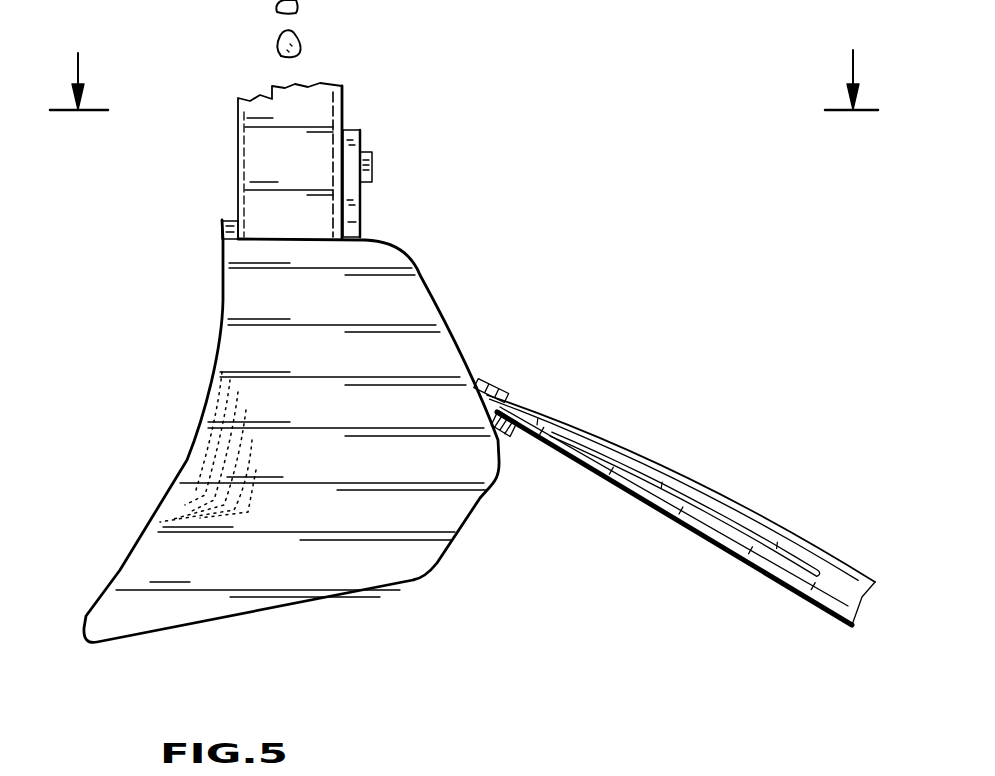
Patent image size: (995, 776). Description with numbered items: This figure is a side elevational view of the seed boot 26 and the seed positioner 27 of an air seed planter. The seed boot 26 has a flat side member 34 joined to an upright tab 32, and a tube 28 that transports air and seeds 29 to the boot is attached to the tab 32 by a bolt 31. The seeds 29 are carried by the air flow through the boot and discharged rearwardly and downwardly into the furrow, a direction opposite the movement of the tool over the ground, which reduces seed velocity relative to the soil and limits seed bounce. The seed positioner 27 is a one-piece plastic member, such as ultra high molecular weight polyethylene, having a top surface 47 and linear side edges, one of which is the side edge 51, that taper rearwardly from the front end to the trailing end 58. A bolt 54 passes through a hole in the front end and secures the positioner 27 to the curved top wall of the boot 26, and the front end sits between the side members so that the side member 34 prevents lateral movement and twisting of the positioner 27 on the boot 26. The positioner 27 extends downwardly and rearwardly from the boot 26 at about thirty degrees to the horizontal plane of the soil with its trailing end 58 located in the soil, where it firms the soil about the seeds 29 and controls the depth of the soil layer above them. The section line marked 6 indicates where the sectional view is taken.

The section line 6- 6 is at (467, 76).
The seed boot 26 is at (447, 283).
The seed positioner 27 is at (692, 452).
The tube 28 is at (260, 165).
The seeds 29 is at (300, 48).
The bolt 31 is at (372, 166).
The upright tab 32 is at (355, 217).
The side member 34 is at (437, 348).
The top surface 47 is at (815, 549).
The side edge 51 is at (683, 513).
The bolt 54 is at (510, 397).
The trailing end 58 is at (862, 598).